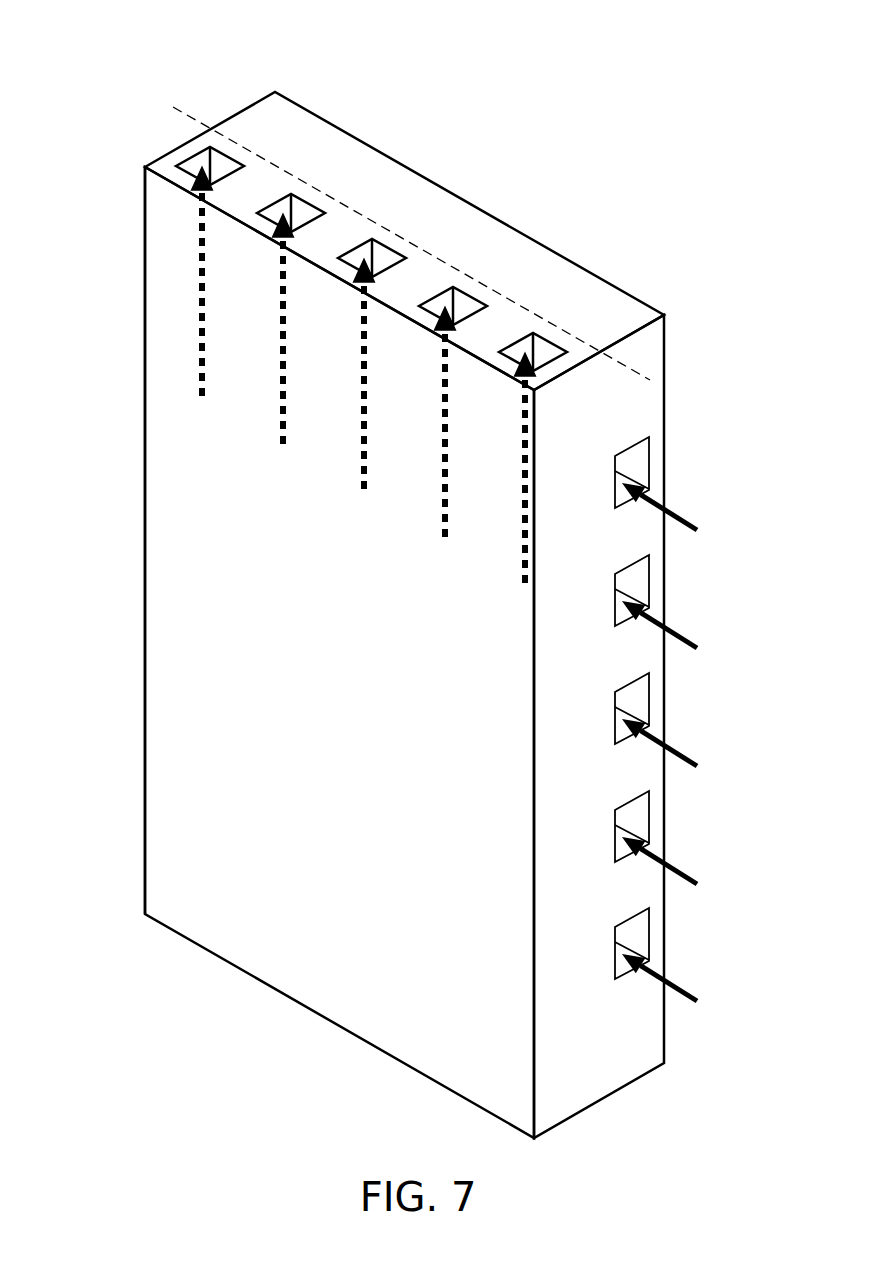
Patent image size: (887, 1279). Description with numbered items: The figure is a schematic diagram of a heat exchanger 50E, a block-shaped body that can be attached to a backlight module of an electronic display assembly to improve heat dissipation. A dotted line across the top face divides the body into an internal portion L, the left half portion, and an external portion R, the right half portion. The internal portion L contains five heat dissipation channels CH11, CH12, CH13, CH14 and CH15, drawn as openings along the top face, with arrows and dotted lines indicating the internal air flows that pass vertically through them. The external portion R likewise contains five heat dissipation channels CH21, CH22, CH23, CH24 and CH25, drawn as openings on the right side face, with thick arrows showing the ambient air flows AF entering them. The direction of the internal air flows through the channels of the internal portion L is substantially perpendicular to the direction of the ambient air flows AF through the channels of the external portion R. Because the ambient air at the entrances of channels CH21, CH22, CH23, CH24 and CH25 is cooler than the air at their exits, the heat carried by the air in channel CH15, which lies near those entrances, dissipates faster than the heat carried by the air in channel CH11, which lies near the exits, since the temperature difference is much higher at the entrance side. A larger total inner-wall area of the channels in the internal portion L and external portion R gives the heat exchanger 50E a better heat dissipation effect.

The heat exchanger 50E is at (67, 33).
The internal portion L is at (162, 157).
The external portion R is at (252, 104).
The heat dissipation channel CH11 is at (227, 153).
The heat dissipation channel CH12 is at (308, 200).
The heat dissipation channel CH13 is at (389, 245).
The heat dissipation channel CH14 is at (470, 293).
The heat dissipation channel CH15 is at (550, 339).
The heat dissipation channel CH21 is at (650, 457).
The heat dissipation channel CH22 is at (650, 575).
The heat dissipation channel CH23 is at (650, 693).
The heat dissipation channel CH24 is at (650, 811).
The heat dissipation channel CH25 is at (650, 928).
The ambient air flows AF is at (678, 742).